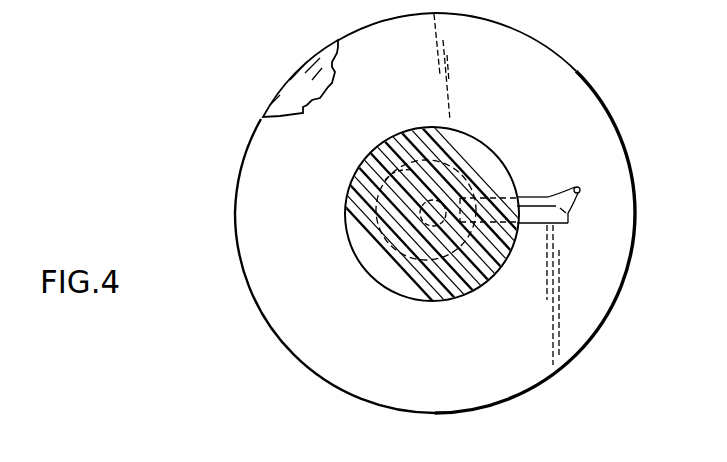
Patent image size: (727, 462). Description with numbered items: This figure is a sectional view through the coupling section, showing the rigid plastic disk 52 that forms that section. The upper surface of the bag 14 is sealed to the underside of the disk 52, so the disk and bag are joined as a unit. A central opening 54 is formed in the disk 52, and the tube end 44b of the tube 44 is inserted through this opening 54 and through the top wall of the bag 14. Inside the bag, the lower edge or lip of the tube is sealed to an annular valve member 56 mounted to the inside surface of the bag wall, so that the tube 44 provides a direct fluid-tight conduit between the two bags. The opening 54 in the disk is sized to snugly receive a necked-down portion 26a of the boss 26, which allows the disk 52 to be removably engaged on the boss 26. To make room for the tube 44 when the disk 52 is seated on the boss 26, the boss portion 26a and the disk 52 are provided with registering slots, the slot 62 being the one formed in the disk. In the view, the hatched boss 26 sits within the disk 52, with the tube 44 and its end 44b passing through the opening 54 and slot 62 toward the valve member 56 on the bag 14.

The bag 14 is at (288, 84).
The boss 26 is at (393, 131).
The necked-down portion of boss 26a is at (378, 162).
The tube 44 is at (561, 195).
The tube end 44b is at (492, 163).
The rigid plastic disk 52 is at (635, 215).
The central opening 54 is at (378, 205).
The annular valve member 56 is at (370, 247).
The slot 62 is at (562, 222).